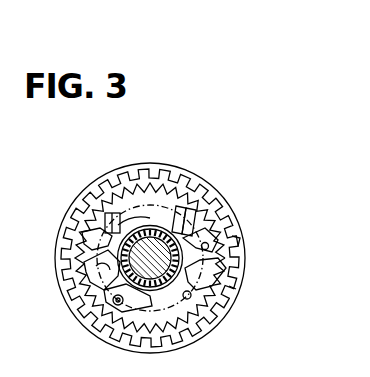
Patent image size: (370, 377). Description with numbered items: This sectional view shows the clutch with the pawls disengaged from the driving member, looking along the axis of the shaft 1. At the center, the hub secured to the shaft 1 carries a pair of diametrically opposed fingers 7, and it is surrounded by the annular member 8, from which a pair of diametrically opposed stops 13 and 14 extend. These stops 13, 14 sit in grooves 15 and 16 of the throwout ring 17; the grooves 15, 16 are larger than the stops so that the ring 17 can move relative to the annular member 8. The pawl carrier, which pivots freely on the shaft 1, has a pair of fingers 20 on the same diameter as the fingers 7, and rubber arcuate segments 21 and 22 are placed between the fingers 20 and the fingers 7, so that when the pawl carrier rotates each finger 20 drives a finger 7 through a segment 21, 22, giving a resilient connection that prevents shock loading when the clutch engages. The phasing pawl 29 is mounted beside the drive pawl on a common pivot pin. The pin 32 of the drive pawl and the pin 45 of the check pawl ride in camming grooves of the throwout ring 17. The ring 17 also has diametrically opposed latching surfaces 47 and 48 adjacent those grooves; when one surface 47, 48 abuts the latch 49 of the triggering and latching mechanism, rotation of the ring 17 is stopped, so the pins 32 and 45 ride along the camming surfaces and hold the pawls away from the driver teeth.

The shaft 1 is at (205, 322).
The fingers 7 is at (192, 243).
The annular member 8 is at (165, 290).
The stop 13 is at (182, 217).
The stop 14 is at (127, 290).
The groove 15 is at (169, 224).
The groove 16 is at (143, 294).
The throwout ring 17 is at (140, 214).
The fingers 20 is at (208, 248).
The rubber arcuate segment 21 is at (132, 244).
The rubber arcuate segment 22 is at (212, 303).
The phasing pawl 29 is at (183, 232).
The pin 32 is at (238, 240).
The pin 45 is at (95, 261).
The latching surface 47 is at (215, 268).
The latching surface 48 is at (88, 234).
The latch 49 is at (224, 288).